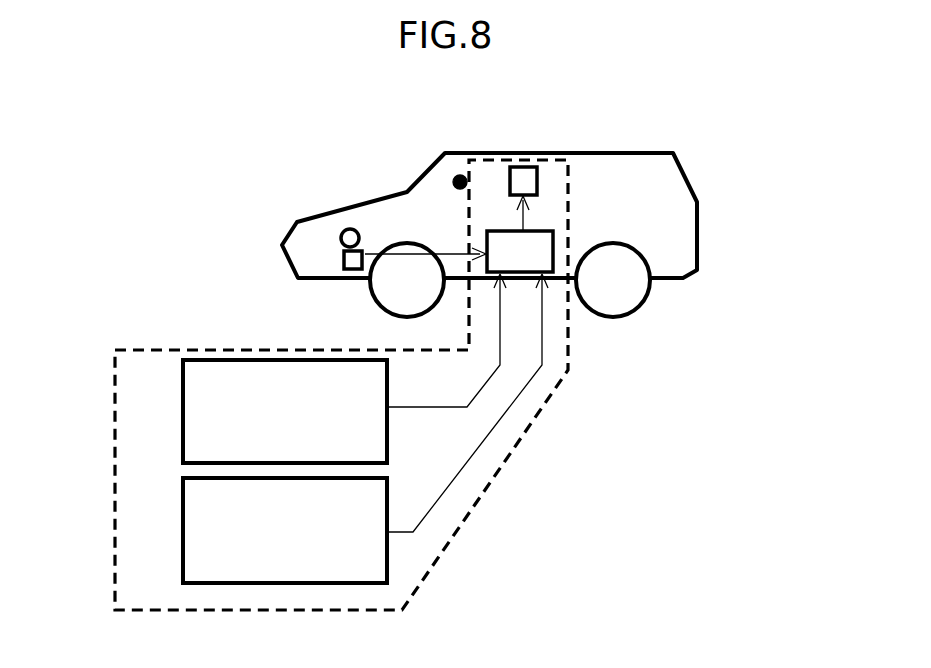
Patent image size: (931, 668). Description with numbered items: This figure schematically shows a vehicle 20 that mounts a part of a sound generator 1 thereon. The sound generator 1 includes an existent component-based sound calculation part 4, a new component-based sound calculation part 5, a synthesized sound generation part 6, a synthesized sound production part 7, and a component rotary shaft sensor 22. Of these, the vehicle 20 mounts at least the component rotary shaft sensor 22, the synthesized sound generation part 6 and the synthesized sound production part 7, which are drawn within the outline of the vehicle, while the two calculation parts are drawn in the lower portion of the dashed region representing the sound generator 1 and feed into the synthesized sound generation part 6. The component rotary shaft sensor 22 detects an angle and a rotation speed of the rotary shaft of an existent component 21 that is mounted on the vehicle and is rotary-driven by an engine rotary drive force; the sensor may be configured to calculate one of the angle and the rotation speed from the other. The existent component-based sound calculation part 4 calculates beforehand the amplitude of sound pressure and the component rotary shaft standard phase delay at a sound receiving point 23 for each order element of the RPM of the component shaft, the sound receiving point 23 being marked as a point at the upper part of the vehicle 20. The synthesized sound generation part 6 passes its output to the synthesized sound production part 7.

The sound generator 1 is at (478, 505).
The existent component-based sound calculation part 4 is at (185, 448).
The new component-based sound calculation part 5 is at (185, 575).
The synthesized sound generation part 6 is at (545, 255).
The synthesized sound production part 7 is at (520, 185).
The vehicle 20 is at (680, 170).
The existent component 21 is at (342, 231).
The component rotary shaft sensor 22 is at (344, 262).
The sound receiving point 23 is at (459, 178).